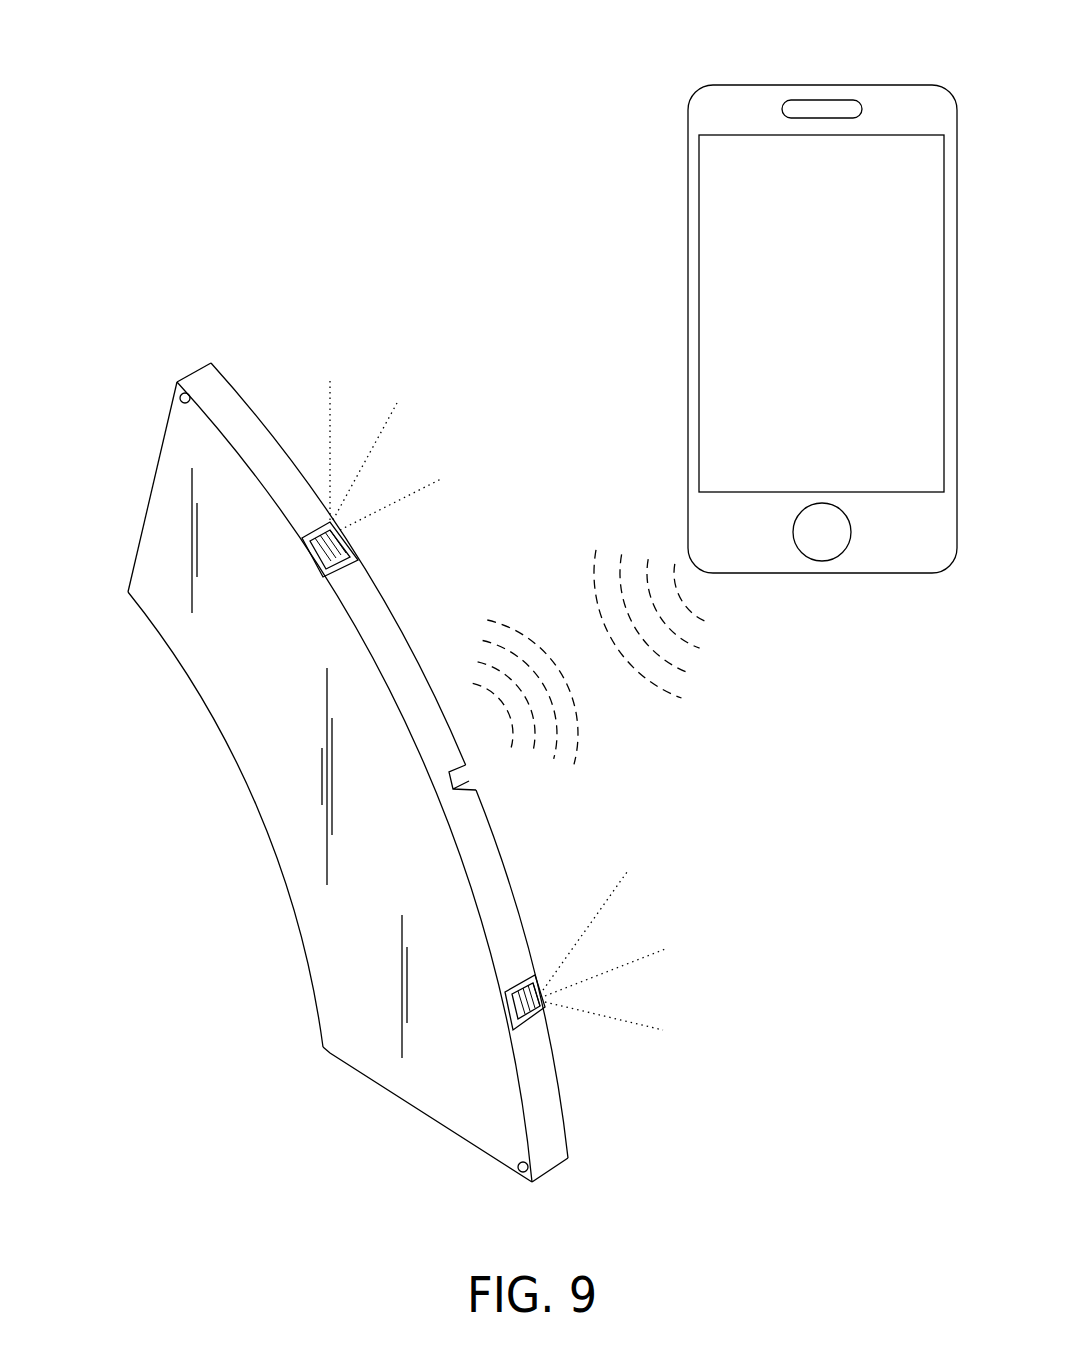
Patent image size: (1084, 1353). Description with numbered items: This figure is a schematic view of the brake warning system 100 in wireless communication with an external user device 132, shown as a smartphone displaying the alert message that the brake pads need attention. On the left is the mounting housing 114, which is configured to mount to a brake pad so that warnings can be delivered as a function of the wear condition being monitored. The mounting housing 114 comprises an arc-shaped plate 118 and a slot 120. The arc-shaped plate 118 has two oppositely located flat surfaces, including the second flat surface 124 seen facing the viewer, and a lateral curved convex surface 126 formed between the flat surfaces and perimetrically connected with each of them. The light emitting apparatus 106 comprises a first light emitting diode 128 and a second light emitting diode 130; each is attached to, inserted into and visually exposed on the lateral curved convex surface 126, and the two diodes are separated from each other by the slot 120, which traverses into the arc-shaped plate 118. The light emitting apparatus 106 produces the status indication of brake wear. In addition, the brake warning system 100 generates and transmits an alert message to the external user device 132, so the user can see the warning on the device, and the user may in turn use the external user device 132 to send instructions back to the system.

The brake warning system 100 is at (170, 338).
The arc-shaped plate 118 is at (130, 545).
The lateral curved convex surface 126 is at (218, 397).
The second flat surface 124 is at (232, 675).
The mounting housing 114 is at (345, 970).
The slot 120 is at (478, 780).
The light emitting apparatus 106 is at (498, 734).
The first light emitting diode 128 is at (345, 567).
The second light emitting diode 130 is at (533, 1020).
The external user device 132 is at (822, 60).